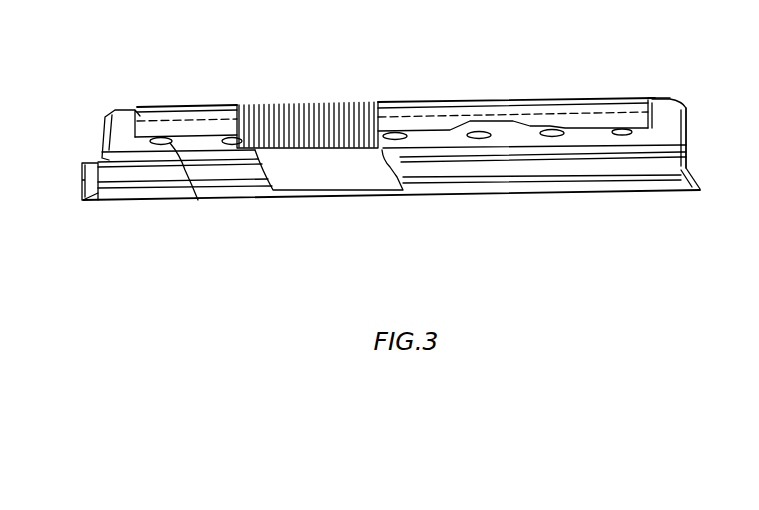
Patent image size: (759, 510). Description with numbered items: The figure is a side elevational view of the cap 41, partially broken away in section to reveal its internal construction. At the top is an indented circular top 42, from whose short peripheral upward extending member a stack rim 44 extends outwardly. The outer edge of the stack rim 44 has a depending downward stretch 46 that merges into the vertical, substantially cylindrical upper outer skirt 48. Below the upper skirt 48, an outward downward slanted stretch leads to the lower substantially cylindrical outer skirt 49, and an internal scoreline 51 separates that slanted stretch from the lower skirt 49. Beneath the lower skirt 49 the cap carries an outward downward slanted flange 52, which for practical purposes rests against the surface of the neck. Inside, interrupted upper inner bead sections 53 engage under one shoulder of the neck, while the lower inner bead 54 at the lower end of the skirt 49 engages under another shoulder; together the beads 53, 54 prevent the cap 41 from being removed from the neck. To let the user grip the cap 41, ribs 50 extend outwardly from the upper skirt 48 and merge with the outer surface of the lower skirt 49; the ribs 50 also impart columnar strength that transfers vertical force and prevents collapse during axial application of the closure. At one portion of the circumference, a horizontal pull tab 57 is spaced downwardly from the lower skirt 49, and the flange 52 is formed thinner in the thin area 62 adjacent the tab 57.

The cap 41 is at (446, 81).
The indented circular top 42 is at (573, 111).
The stack rim 44 is at (658, 95).
The depending downward stretch 46 is at (142, 111).
The upper outer skirt 48 is at (688, 128).
The lower outer skirt 49 is at (690, 161).
The ribs 50 is at (303, 106).
The internal scoreline 51 is at (613, 158).
The outward downward slanted flange 52 is at (663, 188).
The upper inner bead sections 53 is at (198, 200).
The lower inner bead 54 is at (152, 183).
The pull tab 57 is at (83, 180).
The thin area 62 is at (93, 200).